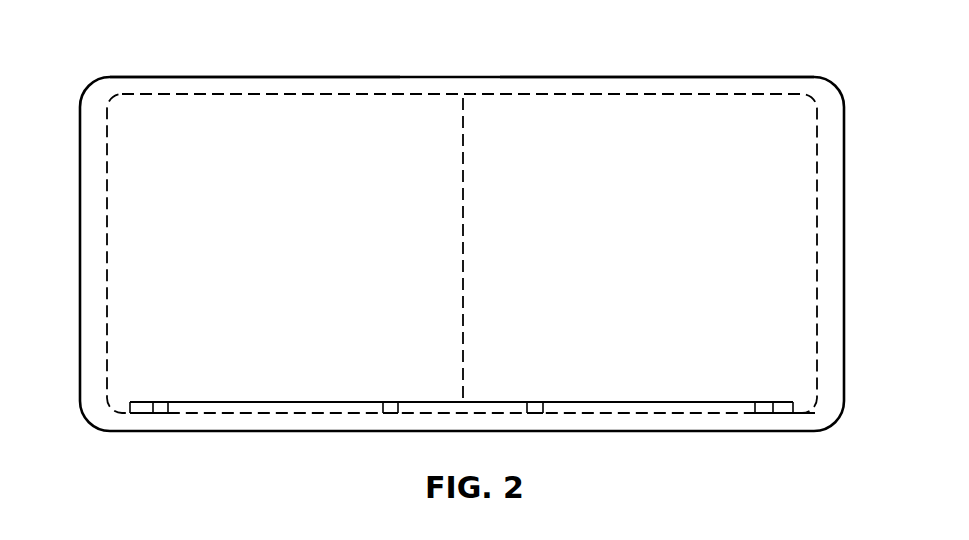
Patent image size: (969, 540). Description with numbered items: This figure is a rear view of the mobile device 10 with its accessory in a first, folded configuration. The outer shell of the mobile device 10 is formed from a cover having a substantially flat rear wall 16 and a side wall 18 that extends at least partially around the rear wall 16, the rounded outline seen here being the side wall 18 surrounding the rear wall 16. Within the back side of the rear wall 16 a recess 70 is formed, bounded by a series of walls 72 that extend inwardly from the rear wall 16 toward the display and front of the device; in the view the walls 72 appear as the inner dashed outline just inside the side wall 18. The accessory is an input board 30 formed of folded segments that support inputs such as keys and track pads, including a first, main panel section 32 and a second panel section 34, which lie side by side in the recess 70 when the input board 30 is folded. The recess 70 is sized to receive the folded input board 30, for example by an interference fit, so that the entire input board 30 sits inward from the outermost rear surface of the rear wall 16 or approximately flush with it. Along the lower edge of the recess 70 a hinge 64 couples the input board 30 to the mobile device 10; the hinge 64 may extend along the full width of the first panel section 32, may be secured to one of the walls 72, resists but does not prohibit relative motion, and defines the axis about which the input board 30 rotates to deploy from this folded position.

The mobile device 10 is at (103, 33).
The rear wall 16 is at (162, 87).
The side wall 18 is at (775, 78).
The input board 30 is at (590, 133).
The first panel section 32 is at (308, 128).
The second panel section 34 is at (789, 231).
The hinge 64 is at (235, 407).
The recess 70 is at (515, 120).
The walls 72 is at (260, 92).